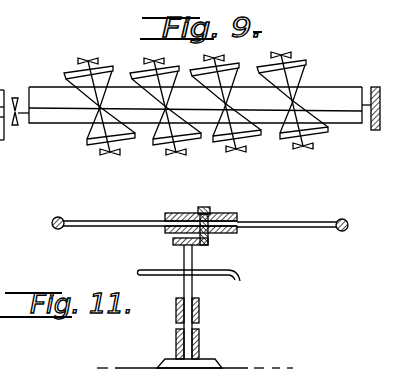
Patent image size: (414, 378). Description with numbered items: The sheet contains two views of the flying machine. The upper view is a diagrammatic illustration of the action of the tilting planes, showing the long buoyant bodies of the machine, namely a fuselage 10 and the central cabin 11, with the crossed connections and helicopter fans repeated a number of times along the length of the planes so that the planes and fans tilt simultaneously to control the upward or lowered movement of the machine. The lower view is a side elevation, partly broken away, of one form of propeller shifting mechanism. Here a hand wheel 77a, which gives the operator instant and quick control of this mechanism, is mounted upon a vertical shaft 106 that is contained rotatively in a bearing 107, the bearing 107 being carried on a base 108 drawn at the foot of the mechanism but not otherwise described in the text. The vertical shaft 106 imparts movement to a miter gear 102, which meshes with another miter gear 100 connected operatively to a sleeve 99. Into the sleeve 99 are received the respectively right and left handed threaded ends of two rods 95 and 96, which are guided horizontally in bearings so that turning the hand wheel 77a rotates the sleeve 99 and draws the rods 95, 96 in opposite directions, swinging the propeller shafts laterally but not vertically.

In FIG. 9, the fuselage 10 is at (348, 120).
In FIG. 9, the central cabin 11 is at (330, 91).
In FIG. 11, the rod 95 is at (155, 212).
In FIG. 11, the rod 96 is at (306, 229).
In FIG. 11, the sleeve 99 is at (229, 215).
In FIG. 11, the miter gear 100 is at (206, 208).
In FIG. 11, the miter gear 102 is at (168, 243).
In FIG. 11, the vertical shaft 106 is at (193, 257).
In FIG. 11, the hand wheel 77a is at (197, 284).
In FIG. 11, the bearing 107 is at (196, 312).
In FIG. 11, the base 108 is at (208, 362).